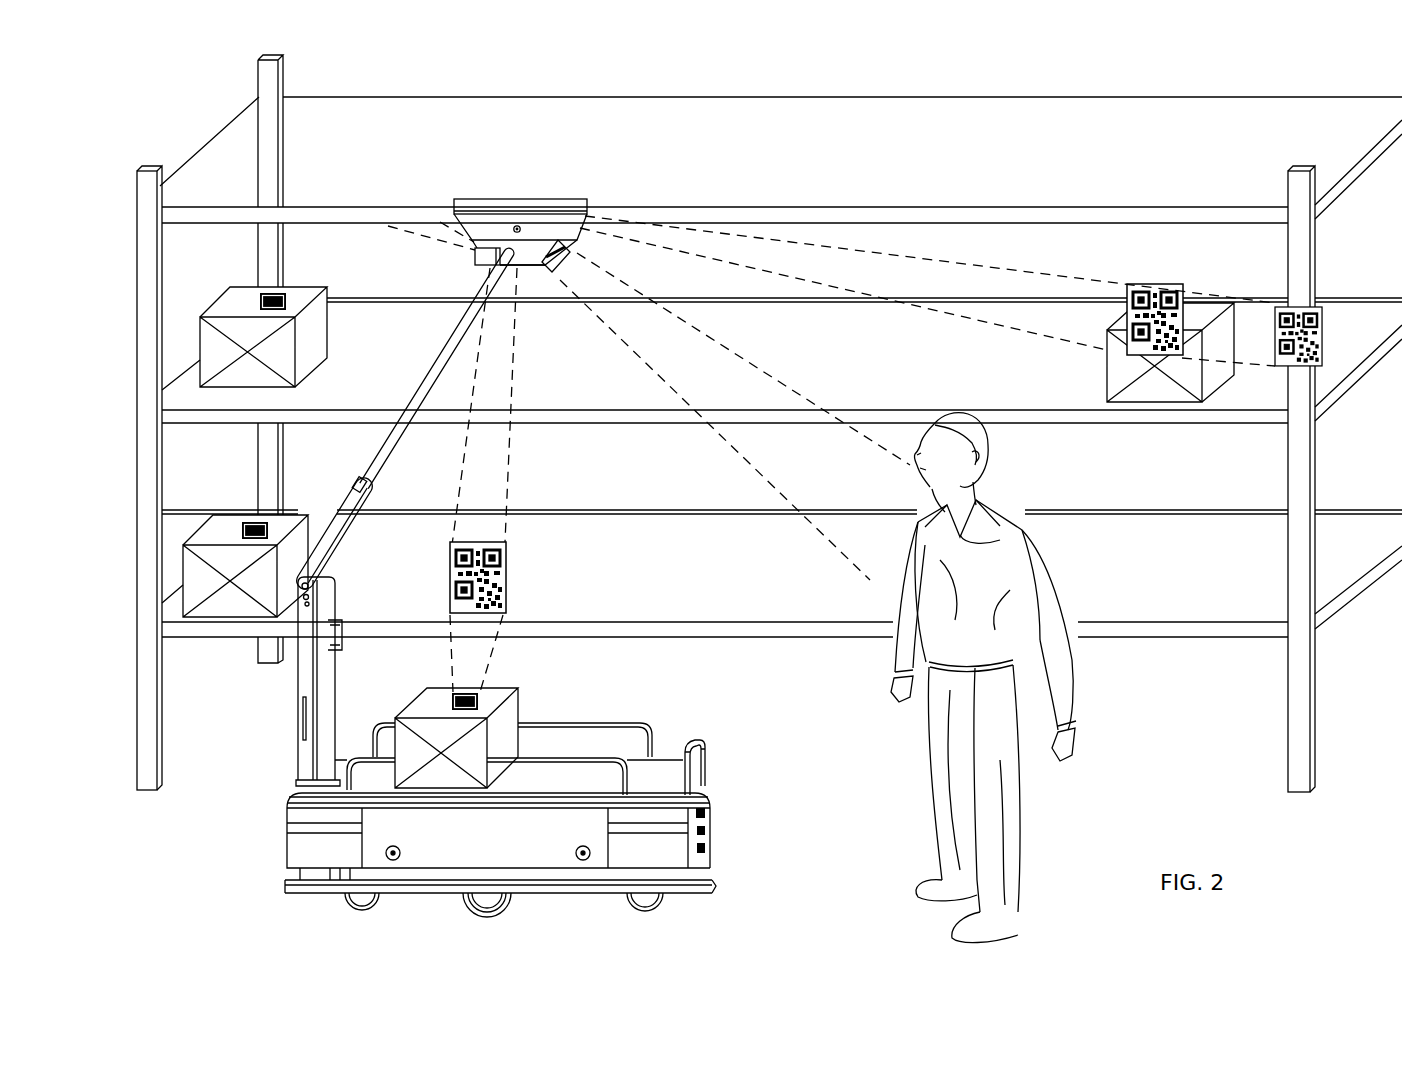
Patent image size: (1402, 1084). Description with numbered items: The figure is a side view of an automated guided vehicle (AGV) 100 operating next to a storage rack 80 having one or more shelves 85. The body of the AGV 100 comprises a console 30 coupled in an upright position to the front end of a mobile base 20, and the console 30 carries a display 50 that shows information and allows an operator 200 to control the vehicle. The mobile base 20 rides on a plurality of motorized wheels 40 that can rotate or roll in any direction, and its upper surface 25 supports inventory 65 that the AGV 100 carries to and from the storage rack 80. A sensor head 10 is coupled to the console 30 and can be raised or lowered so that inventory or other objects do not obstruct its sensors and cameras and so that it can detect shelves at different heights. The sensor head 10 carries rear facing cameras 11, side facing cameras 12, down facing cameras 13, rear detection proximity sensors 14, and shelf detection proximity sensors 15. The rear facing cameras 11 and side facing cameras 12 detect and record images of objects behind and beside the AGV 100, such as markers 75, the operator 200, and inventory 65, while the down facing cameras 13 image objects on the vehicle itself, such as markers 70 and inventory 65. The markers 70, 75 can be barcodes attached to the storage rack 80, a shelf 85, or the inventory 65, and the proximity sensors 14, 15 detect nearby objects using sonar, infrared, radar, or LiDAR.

The sensor head 10 is at (534, 233).
The rear facing cameras 11 is at (590, 215).
The side facing cameras 12 is at (517, 225).
The down facing cameras 13 is at (519, 266).
The rear detection proximity sensors 14 is at (563, 258).
The shelf detection proximity sensors 15 is at (475, 256).
The mobile base 20 is at (302, 842).
The upper surface 25 is at (670, 773).
The console 30 is at (302, 687).
The motorized wheels 40 is at (467, 908).
The display 50 is at (330, 530).
The inventory 65 is at (513, 710).
The markers 70 is at (506, 563).
The markers 75 is at (1164, 288).
The storage rack 80 is at (143, 194).
The shelves 85 is at (240, 140).
The automated guided vehicle (AGV) 100 is at (458, 598).
The operator 200 is at (1022, 530).